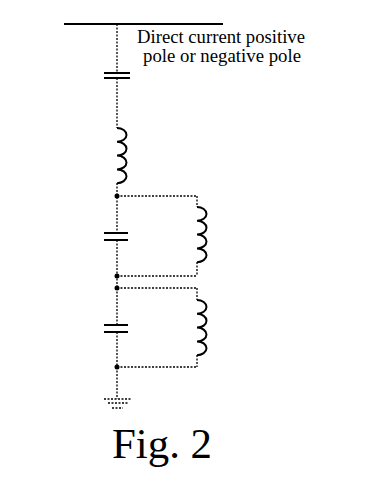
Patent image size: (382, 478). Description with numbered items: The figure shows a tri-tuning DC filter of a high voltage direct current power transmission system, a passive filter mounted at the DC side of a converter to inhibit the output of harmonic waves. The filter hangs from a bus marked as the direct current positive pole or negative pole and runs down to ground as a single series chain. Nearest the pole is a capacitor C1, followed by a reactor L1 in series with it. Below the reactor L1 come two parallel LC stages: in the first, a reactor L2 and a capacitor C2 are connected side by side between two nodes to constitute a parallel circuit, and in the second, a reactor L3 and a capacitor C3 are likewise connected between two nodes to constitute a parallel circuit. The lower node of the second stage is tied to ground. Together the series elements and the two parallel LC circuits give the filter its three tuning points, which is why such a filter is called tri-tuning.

The capacitor C1 is at (131, 75).
The reactor L1 is at (139, 155).
The capacitor C2 is at (129, 224).
The reactor L2 is at (215, 234).
The capacitor C3 is at (129, 317).
The reactor L3 is at (215, 327).